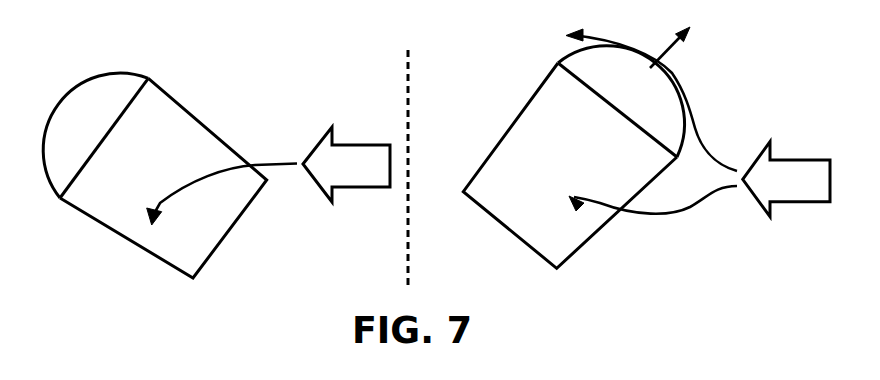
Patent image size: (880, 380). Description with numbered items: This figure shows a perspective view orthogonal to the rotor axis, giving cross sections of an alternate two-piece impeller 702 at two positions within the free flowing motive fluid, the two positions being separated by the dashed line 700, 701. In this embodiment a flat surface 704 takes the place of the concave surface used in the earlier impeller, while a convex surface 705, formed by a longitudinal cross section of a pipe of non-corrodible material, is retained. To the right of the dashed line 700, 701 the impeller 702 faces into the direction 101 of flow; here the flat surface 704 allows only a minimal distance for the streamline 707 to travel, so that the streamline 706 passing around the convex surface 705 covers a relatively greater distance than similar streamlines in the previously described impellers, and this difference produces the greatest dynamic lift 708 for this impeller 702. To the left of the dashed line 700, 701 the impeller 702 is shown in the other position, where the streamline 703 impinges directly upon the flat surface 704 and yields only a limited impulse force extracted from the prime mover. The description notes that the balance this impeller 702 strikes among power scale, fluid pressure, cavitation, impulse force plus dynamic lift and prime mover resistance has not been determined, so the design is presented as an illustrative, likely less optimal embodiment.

The direction of flow 101 is at (375, 175).
The dashed line end 700 is at (434, 287).
The dashed line end 701 is at (390, 159).
The impeller 702 is at (97, 136).
The streamline 703 is at (265, 164).
The flat surface 704 is at (240, 222).
The convex surface 705 is at (82, 77).
The streamline 706 is at (678, 80).
The streamline 707 is at (667, 215).
The dynamic lift 708 is at (702, 17).